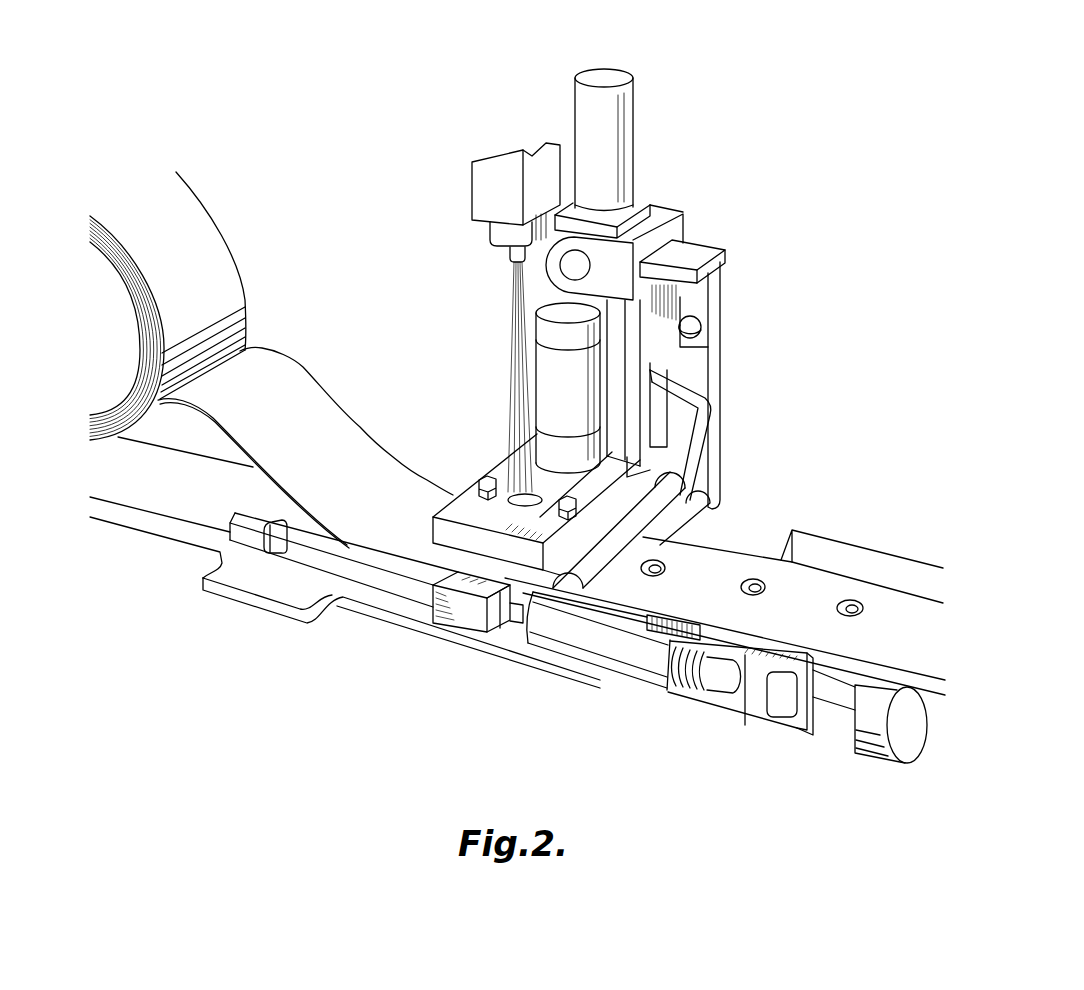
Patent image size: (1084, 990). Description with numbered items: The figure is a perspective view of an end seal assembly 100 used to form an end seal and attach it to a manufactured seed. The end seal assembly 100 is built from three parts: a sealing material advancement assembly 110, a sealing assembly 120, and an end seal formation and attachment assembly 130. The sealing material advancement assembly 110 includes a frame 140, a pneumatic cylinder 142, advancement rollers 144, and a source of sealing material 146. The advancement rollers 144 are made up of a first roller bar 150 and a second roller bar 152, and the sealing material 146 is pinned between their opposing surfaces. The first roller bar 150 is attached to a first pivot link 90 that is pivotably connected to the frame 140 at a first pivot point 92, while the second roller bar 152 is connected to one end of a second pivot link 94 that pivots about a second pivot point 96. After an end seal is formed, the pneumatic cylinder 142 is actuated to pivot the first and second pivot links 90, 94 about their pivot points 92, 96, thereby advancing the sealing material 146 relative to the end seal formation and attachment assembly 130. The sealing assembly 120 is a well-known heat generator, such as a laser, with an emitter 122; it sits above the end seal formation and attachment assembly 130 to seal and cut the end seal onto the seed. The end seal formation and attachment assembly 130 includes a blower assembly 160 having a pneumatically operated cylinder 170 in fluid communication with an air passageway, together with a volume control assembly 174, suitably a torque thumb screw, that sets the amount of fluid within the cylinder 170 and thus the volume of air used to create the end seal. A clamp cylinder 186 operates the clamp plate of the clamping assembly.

The first pivot link 90 is at (719, 373).
The first pivot point 92 is at (703, 320).
The second pivot link 94 is at (706, 450).
The second pivot point 96 is at (575, 265).
The end seal assembly 100 is at (657, 325).
The sealing material advancement assembly 110 is at (681, 196).
The sealing assembly 120 is at (468, 189).
The emitter 122 is at (510, 255).
The end seal formation and attachment assembly 130 is at (493, 466).
The frame 140 is at (624, 323).
The pneumatic cylinder 142 is at (622, 124).
The advancement rollers 144 is at (718, 521).
The sealing material 146 is at (308, 364).
The first roller bar 150 is at (688, 542).
The second roller bar 152 is at (489, 623).
The blower assembly 160 is at (438, 618).
The pneumatically operated cylinder 170 is at (593, 673).
The volume control assembly 174 is at (700, 696).
The clamp cylinder 186 is at (540, 380).